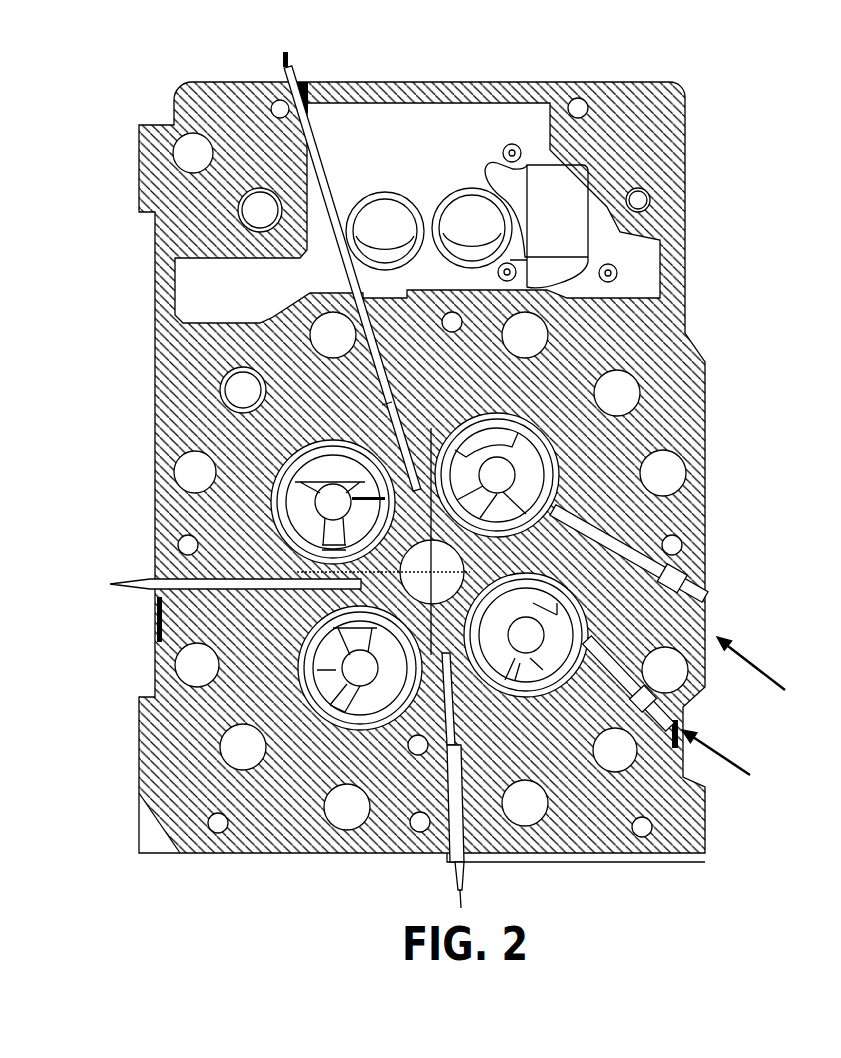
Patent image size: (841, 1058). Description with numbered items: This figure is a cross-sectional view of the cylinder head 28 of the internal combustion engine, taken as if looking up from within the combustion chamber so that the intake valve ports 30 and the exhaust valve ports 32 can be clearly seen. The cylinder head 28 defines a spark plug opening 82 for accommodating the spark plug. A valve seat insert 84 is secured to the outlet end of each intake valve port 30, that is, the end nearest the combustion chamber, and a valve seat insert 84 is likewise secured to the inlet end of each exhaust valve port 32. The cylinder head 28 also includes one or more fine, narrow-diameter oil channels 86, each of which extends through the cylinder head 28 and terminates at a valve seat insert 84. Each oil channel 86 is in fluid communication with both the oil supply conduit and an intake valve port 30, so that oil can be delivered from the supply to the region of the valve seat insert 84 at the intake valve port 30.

The cylinder head 28 is at (478, 80).
The intake valve port 30 is at (538, 447).
The exhaust valve port 32 is at (285, 517).
The spark plug opening 82 is at (408, 580).
The valve seat insert 84 is at (277, 468).
The oil channel 86 is at (612, 663).